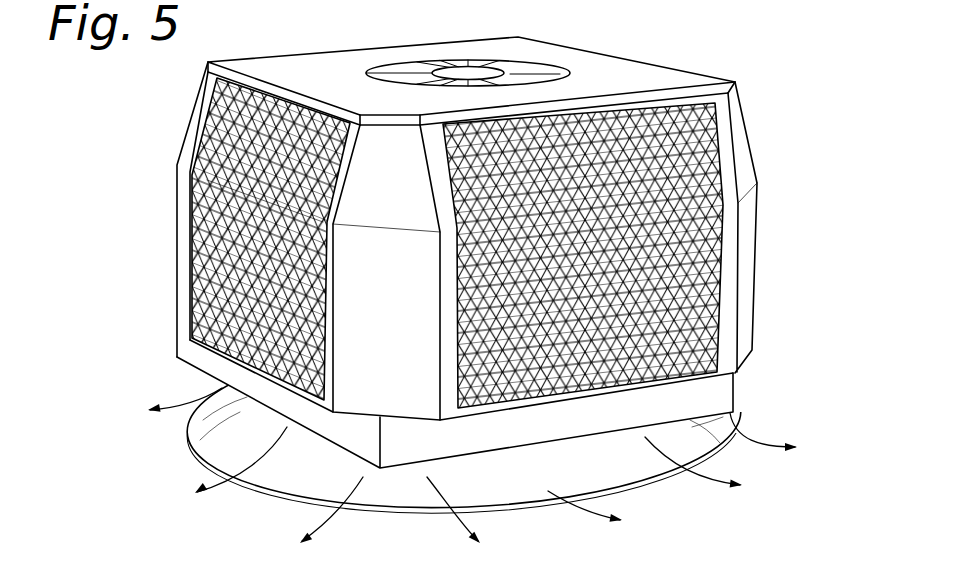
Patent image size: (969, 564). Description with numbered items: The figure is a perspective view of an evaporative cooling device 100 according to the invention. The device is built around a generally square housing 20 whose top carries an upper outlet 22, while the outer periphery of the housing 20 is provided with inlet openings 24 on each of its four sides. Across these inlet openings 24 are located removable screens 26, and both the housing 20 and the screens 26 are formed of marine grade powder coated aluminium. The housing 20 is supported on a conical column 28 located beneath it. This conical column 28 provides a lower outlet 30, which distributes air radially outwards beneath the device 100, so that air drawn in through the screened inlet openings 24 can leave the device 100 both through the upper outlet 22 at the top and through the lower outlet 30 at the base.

The evaporative cooling device 100 is at (730, 53).
The housing 20 is at (750, 160).
The upper outlet 22 is at (536, 72).
The inlet openings 24 is at (683, 312).
The removable screens 26 is at (722, 257).
The conical column 28 is at (600, 483).
The lower outlet 30 is at (605, 462).